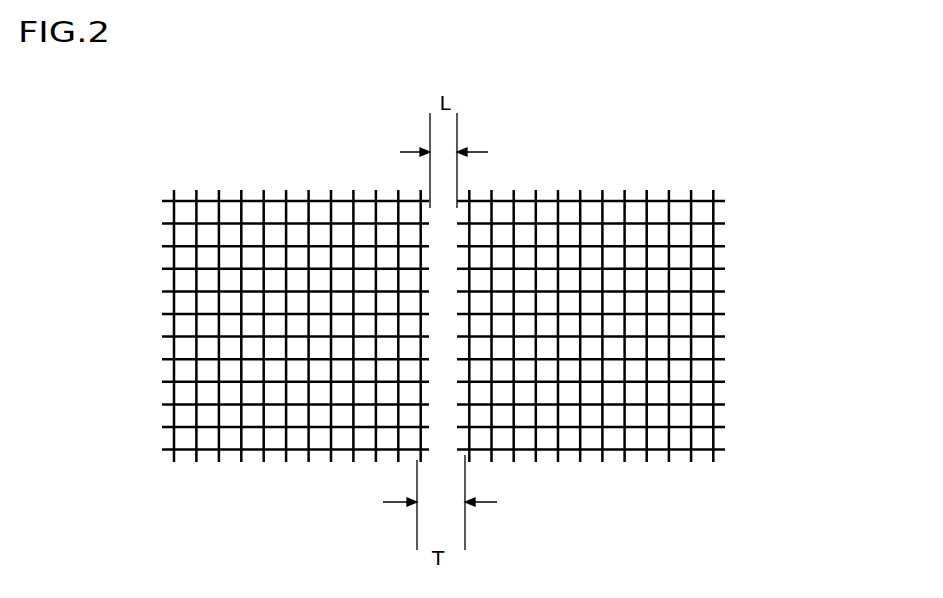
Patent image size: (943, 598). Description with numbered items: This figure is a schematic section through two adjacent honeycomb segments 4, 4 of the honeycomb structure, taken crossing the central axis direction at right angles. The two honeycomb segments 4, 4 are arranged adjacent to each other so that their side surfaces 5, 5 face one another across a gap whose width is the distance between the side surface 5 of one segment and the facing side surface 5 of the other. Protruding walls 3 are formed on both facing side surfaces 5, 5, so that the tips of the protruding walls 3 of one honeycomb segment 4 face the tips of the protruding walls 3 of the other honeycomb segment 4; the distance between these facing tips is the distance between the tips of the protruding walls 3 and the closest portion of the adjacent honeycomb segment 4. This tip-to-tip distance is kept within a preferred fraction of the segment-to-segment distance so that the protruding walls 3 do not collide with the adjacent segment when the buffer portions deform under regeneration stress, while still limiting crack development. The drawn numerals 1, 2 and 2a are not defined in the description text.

The first strand (warp wire) 1 is at (253, 213).
The second strand (weft wire) 2 is at (600, 236).
The strand end portion 2a is at (680, 200).
The protruding wall 3 is at (420, 193).
The honeycomb segment 4 is at (208, 200).
The side surface 5 is at (420, 235).